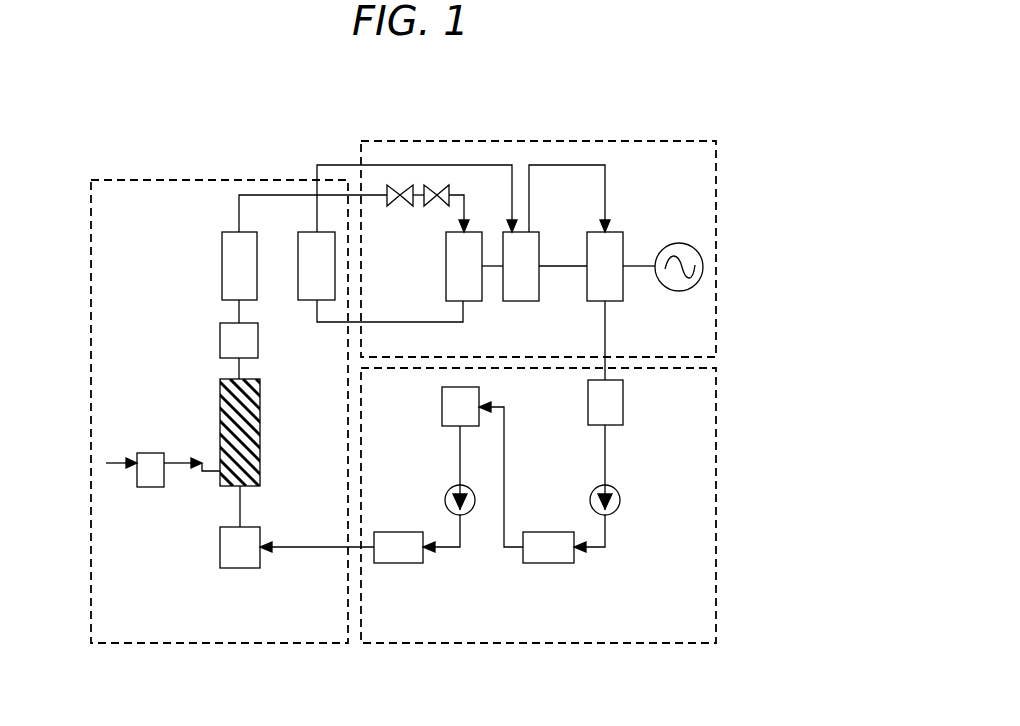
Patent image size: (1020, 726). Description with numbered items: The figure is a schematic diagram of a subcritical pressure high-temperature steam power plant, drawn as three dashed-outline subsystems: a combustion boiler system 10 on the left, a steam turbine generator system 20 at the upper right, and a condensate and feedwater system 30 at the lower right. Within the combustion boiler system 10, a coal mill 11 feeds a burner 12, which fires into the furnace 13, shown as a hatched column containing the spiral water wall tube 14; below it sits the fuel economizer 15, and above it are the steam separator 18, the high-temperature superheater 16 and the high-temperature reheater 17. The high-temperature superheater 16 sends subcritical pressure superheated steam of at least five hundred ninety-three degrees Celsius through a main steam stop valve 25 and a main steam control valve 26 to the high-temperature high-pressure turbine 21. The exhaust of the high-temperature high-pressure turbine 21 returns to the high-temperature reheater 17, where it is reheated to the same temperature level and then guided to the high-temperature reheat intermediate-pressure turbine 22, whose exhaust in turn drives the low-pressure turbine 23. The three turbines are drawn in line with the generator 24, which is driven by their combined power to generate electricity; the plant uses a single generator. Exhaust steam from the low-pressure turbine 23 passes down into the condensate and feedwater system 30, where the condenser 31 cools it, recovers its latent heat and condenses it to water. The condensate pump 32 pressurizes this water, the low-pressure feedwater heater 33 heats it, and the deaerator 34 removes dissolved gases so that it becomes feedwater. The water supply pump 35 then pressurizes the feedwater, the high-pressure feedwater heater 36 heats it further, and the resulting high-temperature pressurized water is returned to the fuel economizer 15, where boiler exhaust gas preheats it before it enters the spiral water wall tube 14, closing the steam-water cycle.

The combustion boiler system 10 is at (190, 180).
The coal mill 11 is at (150, 489).
The burner 12 is at (218, 461).
The furnace 13 is at (220, 392).
The spiral water wall tube 14 is at (246, 421).
The fuel economizer 15 is at (238, 570).
The high-temperature superheater 16 is at (222, 272).
The high-temperature reheater 17 is at (298, 272).
The steam separator 18 is at (220, 340).
The steam turbine generator system 20 is at (716, 200).
The high-temperature high-pressure turbine 21 is at (474, 302).
The high-temperature reheat intermediate-pressure turbine 22 is at (524, 302).
The low-pressure turbine 23 is at (614, 302).
The generator 24 is at (679, 291).
The main steam stop valve 25 is at (399, 185).
The main steam control valve 26 is at (437, 185).
The condensate and feedwater system 30 is at (716, 477).
The condenser 31 is at (588, 402).
The condensate pump 32 is at (590, 500).
The low-pressure feedwater heater 33 is at (552, 565).
The deaerator 34 is at (442, 402).
The water supply pump 35 is at (445, 500).
The high-pressure feedwater heater 36 is at (400, 565).